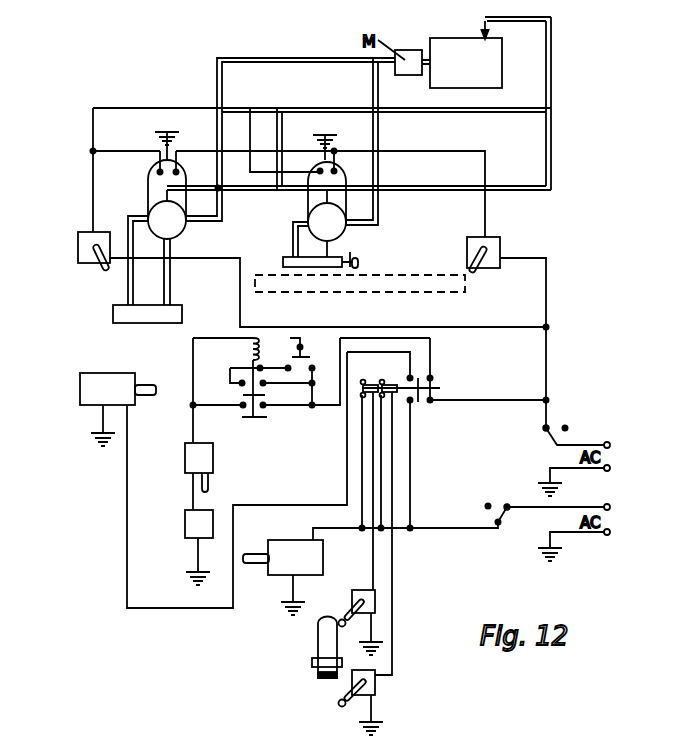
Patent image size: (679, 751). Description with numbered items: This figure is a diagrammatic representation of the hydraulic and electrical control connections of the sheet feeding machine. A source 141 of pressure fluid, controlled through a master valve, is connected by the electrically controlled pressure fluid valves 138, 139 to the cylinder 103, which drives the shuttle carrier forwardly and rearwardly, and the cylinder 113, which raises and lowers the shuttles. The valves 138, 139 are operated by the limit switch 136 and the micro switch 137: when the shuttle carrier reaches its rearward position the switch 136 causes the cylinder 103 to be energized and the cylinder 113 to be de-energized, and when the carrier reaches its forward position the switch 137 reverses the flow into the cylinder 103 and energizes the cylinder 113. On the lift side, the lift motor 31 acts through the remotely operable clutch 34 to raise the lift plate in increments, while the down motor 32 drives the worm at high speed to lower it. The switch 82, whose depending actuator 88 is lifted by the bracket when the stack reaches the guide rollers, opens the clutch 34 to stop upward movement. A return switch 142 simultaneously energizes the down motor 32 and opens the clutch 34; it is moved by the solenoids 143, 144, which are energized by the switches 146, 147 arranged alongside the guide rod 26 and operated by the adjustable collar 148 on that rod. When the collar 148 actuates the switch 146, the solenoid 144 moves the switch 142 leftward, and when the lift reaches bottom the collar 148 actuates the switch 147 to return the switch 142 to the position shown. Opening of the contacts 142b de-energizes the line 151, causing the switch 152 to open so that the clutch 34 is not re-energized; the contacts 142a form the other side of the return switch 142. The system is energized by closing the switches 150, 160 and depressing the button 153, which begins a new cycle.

The source of pressure fluid 141 is at (452, 60).
The pressure fluid valve 139 is at (165, 182).
The pressure fluid valve 138 is at (322, 188).
The micro switch 137 is at (78, 248).
The limit switch 136 is at (498, 246).
The cylinder 113 is at (333, 262).
The cylinder 103 is at (113, 316).
The line 151 is at (418, 340).
The down motor 32 is at (100, 377).
The button 153 is at (281, 345).
The switch 152 is at (270, 416).
The switch 82 is at (186, 456).
The switch actuator 88 is at (209, 490).
The clutch 34 is at (186, 525).
The solenoid 144 is at (363, 382).
The solenoid 143 is at (383, 382).
The return switch 142 is at (426, 407).
The contacts 142b is at (432, 379).
The contacts 142a is at (410, 402).
The switch 160 is at (558, 425).
The switch 150 is at (495, 505).
The lift motor 31 is at (303, 564).
The switch 146 is at (363, 591).
The switch 147 is at (378, 686).
The guide rod 26 is at (327, 635).
The collar 148 is at (312, 663).